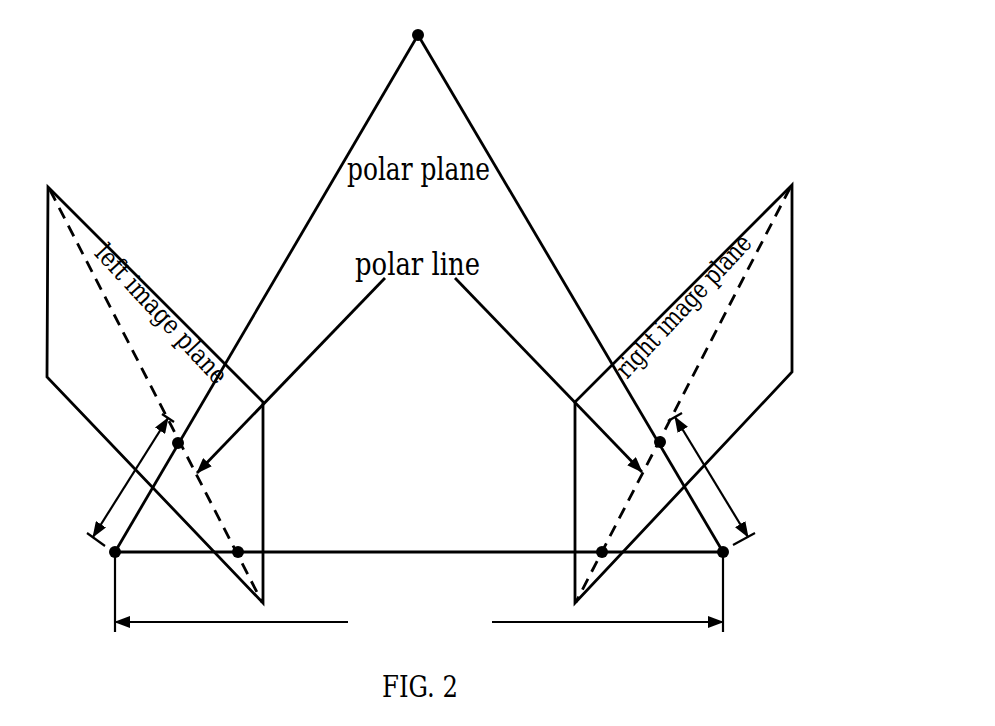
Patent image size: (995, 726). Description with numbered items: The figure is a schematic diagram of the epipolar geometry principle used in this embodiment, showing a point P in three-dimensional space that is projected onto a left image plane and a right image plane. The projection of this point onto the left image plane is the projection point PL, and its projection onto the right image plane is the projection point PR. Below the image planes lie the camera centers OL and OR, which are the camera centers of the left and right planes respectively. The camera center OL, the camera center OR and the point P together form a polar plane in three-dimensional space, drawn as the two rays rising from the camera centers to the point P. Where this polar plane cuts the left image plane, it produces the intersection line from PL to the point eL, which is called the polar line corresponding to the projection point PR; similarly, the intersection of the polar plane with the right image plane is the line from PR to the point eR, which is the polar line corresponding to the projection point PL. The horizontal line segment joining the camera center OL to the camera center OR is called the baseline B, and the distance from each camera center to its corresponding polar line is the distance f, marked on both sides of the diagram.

The point P (X, Y, Z) P is at (501, 44).
The projection point PL is at (197, 443).
The projection point PR is at (641, 430).
The point eL is at (246, 536).
The point eR is at (596, 532).
The camera center OL is at (99, 566).
The camera center OR is at (741, 567).
The distance f is at (421, 479).
The baseline B is at (419, 596).